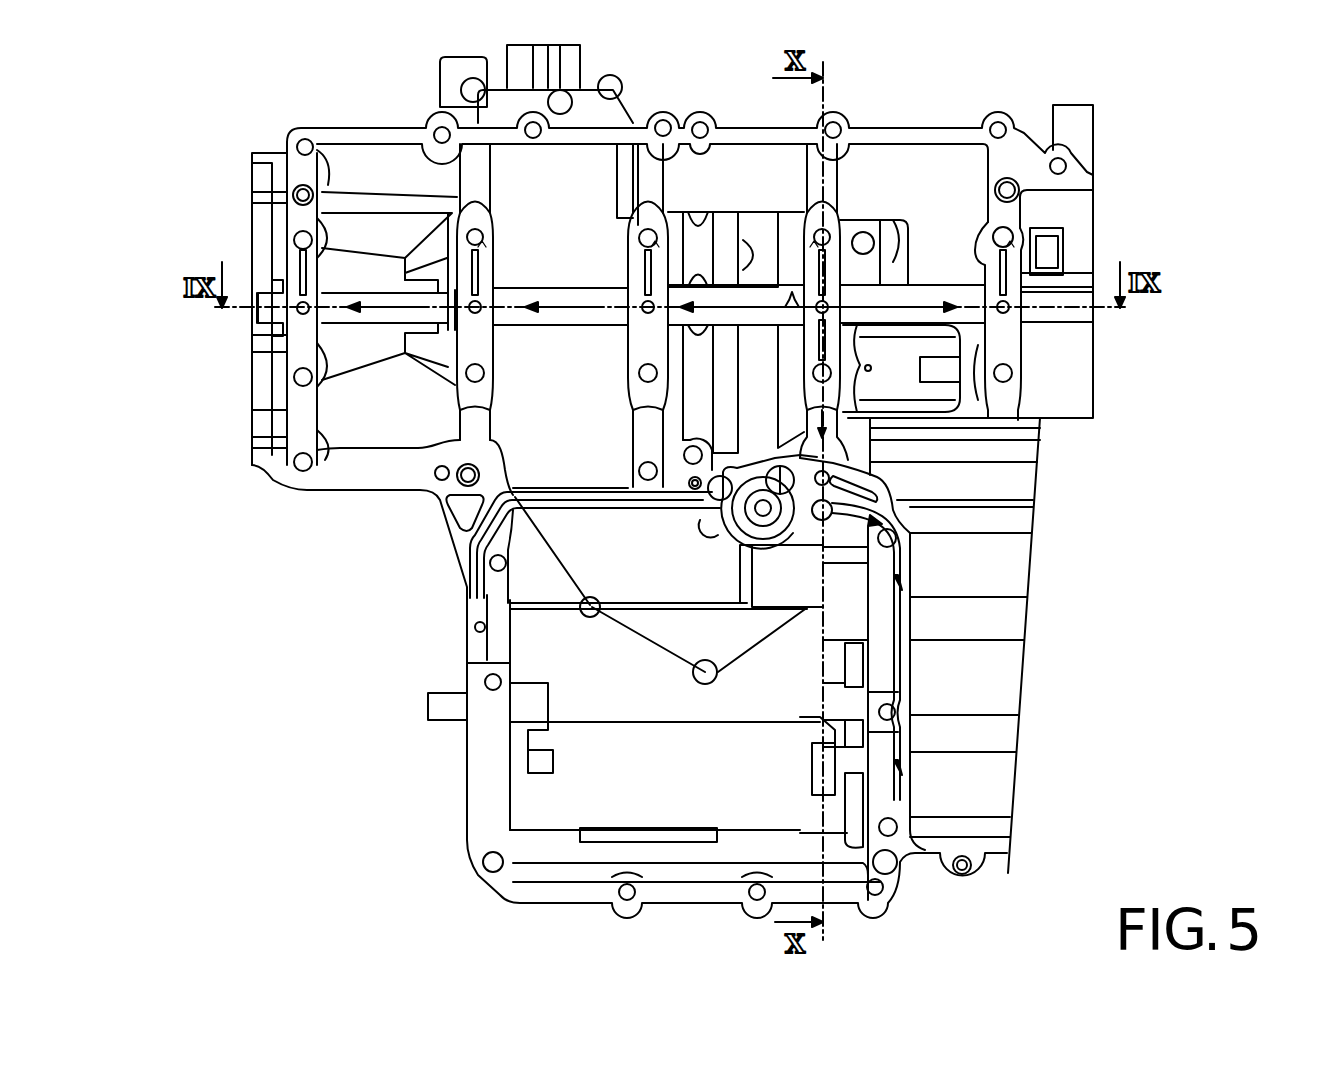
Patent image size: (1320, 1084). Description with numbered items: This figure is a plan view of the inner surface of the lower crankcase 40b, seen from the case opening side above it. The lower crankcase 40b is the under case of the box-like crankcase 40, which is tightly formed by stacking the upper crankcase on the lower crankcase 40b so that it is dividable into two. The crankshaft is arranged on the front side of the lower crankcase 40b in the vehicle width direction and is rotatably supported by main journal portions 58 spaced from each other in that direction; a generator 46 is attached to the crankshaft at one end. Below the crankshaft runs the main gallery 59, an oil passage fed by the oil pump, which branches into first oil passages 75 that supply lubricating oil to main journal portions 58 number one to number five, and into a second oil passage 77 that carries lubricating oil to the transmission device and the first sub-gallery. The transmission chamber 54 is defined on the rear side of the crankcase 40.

The crankcase 40 is at (906, 120).
The lower crankcase 40b is at (945, 123).
The generator 46 is at (245, 388).
The transmission chamber 54 is at (745, 785).
The main journal portions 58 is at (833, 270).
The main gallery 59 is at (560, 287).
The first oil passages 75 is at (300, 268).
The second oil passage 77 is at (477, 551).